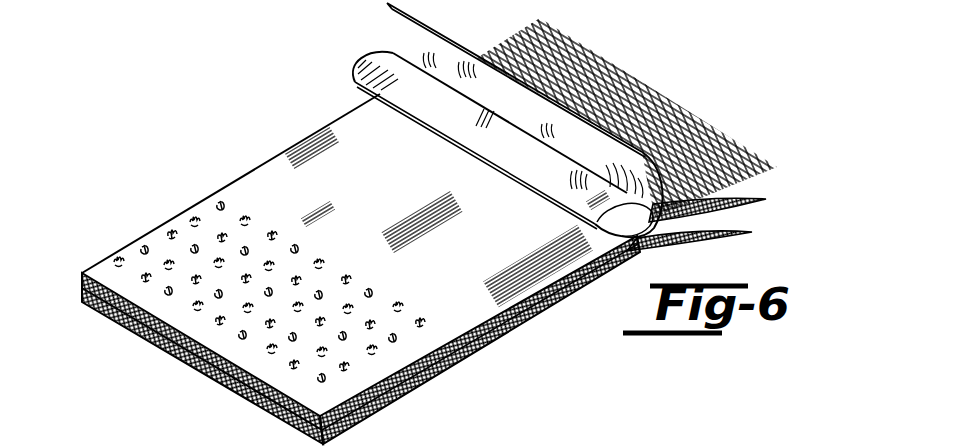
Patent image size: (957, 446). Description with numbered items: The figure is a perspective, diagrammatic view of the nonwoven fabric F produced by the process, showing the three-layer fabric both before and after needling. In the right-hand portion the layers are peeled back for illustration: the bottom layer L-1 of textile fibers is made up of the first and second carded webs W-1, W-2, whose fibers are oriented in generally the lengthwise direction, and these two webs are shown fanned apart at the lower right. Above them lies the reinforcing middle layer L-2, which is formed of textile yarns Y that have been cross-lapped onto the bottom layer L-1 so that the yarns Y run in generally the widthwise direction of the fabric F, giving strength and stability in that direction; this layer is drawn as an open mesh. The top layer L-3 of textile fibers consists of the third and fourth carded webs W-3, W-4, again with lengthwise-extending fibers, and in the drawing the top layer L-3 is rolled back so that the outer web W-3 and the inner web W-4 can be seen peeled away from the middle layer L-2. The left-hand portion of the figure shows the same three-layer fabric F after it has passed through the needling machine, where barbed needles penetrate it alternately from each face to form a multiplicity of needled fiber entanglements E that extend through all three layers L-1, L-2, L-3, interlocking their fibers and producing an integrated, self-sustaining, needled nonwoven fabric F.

The nonwoven fabric F is at (361, 270).
The needled fiber entanglements E is at (216, 168).
The top layer L-3 is at (456, 118).
The fourth carded web W-4 is at (354, 88).
The third carded web W-3 is at (411, 24).
The reinforcing middle layer L-2 is at (630, 114).
The textile yarns Y is at (565, 43).
The bottom layer L-1 is at (745, 213).
The second carded web W-2 is at (742, 195).
The first carded web W-1 is at (735, 236).